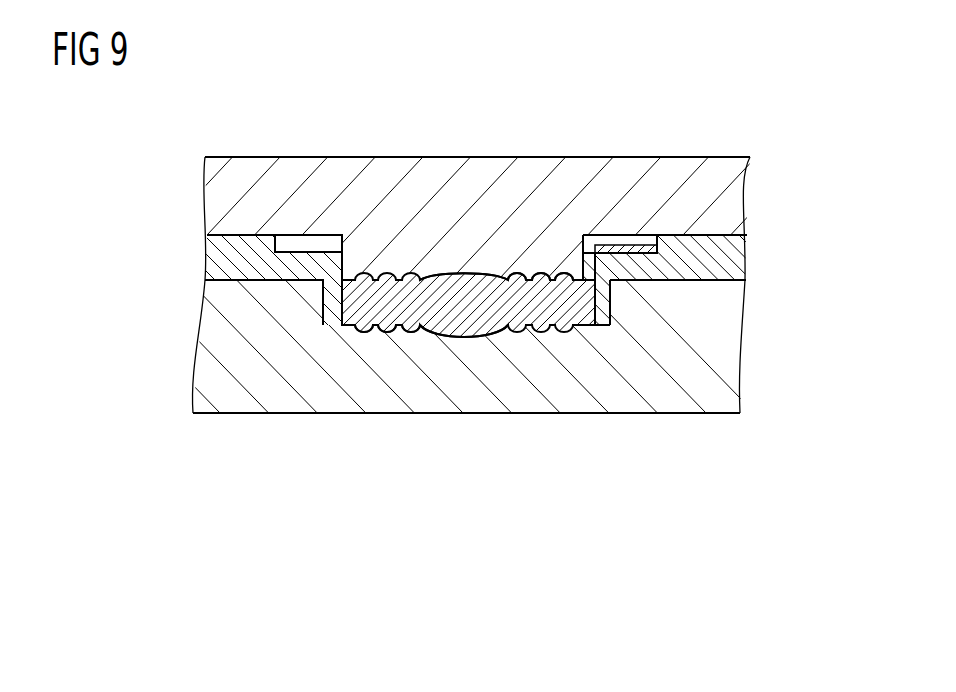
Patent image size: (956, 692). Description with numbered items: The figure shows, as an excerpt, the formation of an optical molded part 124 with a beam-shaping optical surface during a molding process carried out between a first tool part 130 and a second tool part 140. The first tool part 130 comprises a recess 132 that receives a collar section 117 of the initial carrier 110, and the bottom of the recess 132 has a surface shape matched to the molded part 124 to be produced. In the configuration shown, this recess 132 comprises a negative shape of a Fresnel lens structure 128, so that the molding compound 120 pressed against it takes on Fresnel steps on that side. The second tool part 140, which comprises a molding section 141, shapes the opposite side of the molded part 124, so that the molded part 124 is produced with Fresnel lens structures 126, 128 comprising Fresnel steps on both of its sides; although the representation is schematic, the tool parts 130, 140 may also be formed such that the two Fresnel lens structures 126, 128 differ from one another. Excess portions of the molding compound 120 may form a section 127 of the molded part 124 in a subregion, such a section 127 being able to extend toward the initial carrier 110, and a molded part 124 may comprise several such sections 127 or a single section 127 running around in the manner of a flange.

The initial carrier 110 is at (728, 255).
The collar section 117 is at (600, 325).
The molding compound 120 is at (408, 292).
The optical molded part 124 is at (464, 186).
The Fresnel lens structure 126 is at (481, 272).
The section of molded part 127 is at (612, 250).
The Fresnel lens structure 128 is at (467, 335).
The first tool part 130 is at (258, 388).
The recess 132 is at (438, 333).
The second tool part 140 is at (238, 183).
The molding section 141 is at (462, 252).